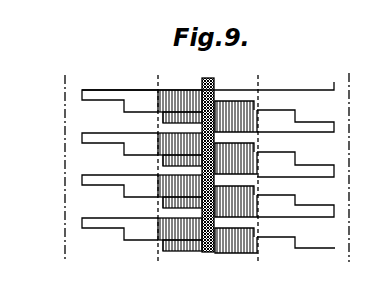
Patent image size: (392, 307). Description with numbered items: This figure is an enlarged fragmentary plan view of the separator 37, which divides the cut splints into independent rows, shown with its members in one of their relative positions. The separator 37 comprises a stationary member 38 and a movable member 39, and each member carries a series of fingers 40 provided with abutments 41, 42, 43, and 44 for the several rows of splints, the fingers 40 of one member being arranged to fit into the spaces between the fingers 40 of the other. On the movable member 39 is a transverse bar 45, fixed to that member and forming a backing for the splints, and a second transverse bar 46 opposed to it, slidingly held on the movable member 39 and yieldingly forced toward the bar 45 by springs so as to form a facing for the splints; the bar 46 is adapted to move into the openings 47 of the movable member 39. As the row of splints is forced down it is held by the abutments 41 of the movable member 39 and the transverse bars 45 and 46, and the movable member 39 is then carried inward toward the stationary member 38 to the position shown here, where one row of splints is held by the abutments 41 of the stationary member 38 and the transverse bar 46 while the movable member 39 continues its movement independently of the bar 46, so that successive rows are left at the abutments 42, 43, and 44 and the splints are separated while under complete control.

The separator 37 is at (45, 167).
The stationary member 38 is at (215, 166).
The movable member 39 is at (120, 164).
The fingers 40 is at (98, 202).
The abutments 41 is at (203, 209).
The abutments 42 is at (163, 160).
The abutments 43 is at (124, 108).
The abutments 44 is at (82, 135).
The transverse bar 45 is at (235, 106).
The second transverse bar 46 is at (180, 90).
The openings 47 is at (222, 136).